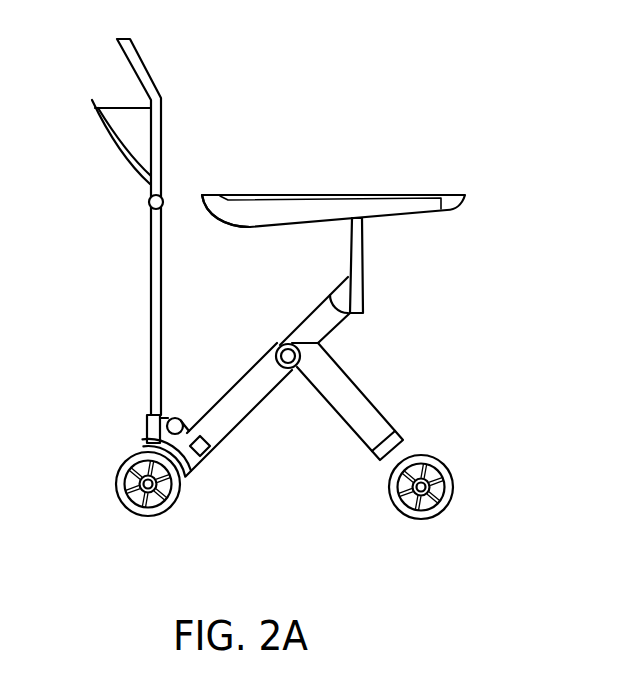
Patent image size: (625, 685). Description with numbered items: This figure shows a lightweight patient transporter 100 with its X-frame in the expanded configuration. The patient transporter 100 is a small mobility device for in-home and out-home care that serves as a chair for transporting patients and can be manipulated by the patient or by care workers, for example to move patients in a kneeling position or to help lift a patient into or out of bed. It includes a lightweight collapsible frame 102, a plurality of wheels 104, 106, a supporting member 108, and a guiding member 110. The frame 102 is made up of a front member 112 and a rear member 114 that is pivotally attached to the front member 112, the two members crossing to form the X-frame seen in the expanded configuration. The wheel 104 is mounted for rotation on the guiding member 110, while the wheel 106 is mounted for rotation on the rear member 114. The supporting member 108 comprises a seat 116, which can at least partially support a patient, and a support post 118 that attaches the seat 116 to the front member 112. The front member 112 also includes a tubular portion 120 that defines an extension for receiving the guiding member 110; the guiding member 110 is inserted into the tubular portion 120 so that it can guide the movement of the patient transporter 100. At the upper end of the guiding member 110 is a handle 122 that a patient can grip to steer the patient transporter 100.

The patient transporter 100 is at (472, 62).
The collapsible frame 102 is at (288, 424).
The wheel 104 is at (117, 490).
The wheel 106 is at (452, 488).
The supporting member 108 is at (405, 205).
The guiding member 110 is at (150, 337).
The front member 112 is at (248, 392).
The rear member 114 is at (345, 395).
The seat 116 is at (243, 212).
The support post 118 is at (365, 250).
The tubular portion 120 is at (148, 427).
The handle 122 is at (135, 141).